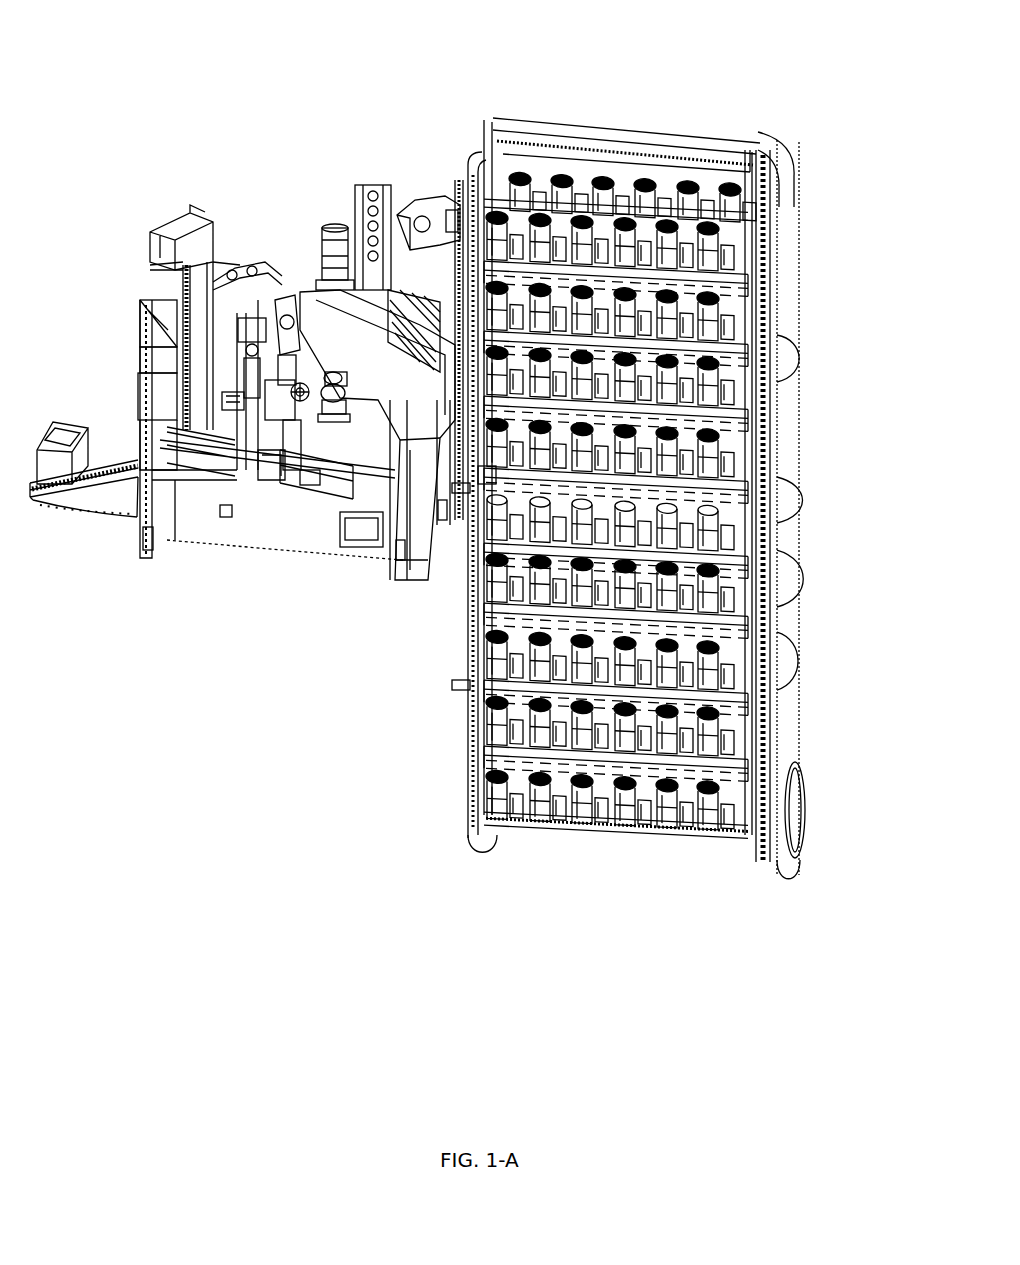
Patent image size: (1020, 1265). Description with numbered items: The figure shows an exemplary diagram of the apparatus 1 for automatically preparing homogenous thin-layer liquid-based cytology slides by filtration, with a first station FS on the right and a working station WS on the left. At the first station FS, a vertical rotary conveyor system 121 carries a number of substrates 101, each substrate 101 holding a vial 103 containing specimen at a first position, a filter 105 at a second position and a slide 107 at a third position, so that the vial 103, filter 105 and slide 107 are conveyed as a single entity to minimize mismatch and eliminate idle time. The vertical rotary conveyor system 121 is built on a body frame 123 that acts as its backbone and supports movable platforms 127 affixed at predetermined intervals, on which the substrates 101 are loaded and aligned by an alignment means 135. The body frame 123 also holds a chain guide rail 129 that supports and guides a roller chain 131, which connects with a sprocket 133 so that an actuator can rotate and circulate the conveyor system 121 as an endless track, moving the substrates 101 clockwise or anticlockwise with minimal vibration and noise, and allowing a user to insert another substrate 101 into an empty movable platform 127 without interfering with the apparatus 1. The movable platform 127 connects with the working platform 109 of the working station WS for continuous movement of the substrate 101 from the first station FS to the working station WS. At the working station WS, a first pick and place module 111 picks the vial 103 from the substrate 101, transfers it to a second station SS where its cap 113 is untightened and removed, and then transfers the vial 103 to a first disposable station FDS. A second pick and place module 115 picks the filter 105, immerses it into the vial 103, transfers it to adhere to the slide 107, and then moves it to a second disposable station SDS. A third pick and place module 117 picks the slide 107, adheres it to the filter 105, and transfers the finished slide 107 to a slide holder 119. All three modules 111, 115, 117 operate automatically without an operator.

The apparatus 1 is at (816, 84).
The working station WS is at (463, 150).
The first station FS is at (790, 132).
The first disposable station FDS is at (339, 372).
The second disposable station SDS is at (232, 412).
The second station SS is at (335, 406).
The substrate 101 is at (707, 263).
The vial 103 is at (705, 249).
The filter 105 is at (743, 313).
The slide 107 is at (738, 445).
The working platform 109 is at (198, 463).
The first pick and place module 111 is at (335, 250).
The cap 113 is at (719, 229).
The second pick and place module 115 is at (282, 307).
The third pick and place module 117 is at (245, 324).
The slide holder 119 is at (66, 468).
The vertical rotary conveyor system 121 is at (845, 145).
The body frame 123 is at (784, 172).
The movable platform 127 is at (743, 480).
The chain guide rail 129 is at (775, 692).
The roller chain 131 is at (772, 780).
The sprocket 133 is at (810, 829).
The alignment means 135 is at (481, 476).